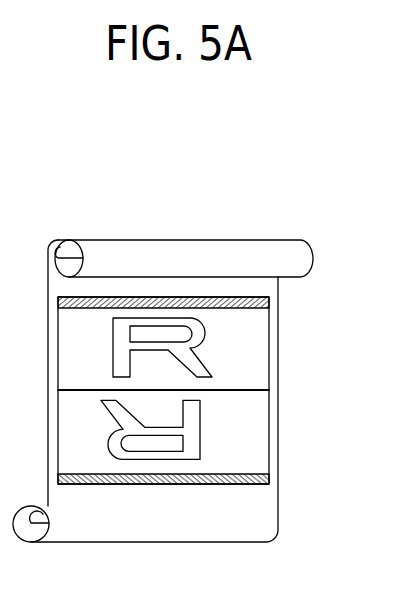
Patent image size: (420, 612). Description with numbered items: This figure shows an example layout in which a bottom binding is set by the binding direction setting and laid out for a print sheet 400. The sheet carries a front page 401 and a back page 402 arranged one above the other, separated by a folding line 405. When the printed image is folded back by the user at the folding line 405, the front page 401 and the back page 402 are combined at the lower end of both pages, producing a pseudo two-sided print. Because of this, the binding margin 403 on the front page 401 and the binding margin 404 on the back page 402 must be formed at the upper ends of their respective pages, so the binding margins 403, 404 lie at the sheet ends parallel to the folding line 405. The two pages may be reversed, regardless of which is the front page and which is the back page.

The print sheet 400 is at (135, 240).
The front page 401 is at (270, 355).
The back page 402 is at (270, 460).
The binding margin 403 is at (270, 303).
The binding margin 404 is at (270, 477).
The folding line 405 is at (243, 391).